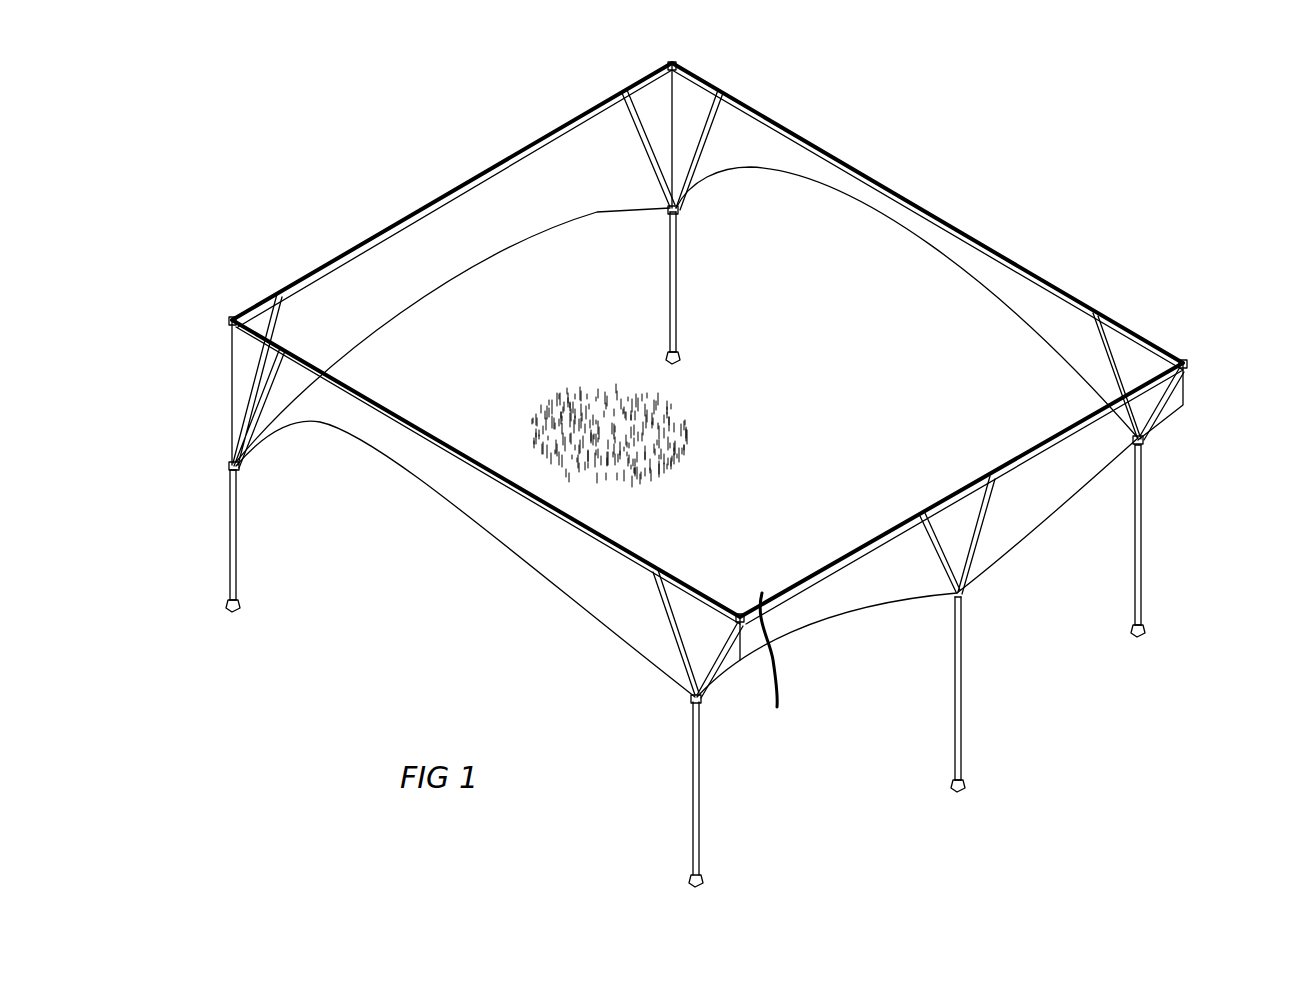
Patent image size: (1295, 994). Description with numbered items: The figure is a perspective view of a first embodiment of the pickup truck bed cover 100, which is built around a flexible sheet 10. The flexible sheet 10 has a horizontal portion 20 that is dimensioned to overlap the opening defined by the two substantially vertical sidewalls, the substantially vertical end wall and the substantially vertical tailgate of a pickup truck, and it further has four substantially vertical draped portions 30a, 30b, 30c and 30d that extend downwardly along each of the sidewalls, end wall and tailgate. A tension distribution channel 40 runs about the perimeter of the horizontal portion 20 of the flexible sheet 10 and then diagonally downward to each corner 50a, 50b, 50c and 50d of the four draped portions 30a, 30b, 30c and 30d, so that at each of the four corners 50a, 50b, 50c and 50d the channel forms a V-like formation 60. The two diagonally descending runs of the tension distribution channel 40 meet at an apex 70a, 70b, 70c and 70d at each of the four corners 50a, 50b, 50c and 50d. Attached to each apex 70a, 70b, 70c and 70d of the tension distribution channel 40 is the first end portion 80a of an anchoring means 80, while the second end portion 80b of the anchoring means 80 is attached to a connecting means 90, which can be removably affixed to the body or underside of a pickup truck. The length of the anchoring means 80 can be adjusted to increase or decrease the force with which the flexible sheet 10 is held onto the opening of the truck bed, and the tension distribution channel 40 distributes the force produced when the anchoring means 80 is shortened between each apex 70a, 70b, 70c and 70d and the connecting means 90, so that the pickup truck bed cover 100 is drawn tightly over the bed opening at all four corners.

The pickup truck bed cover 100 is at (1035, 199).
The flexible sheet 10 is at (1048, 492).
The horizontal portion 20 is at (556, 456).
The substantially vertical draped portion 30a is at (833, 600).
The substantially vertical draped portion 30b is at (622, 590).
The substantially vertical draped portion 30c is at (392, 268).
The substantially vertical draped portion 30d is at (812, 178).
The tension distribution channel 40 is at (778, 673).
The corner 50a is at (1188, 364).
The corner 50b is at (700, 690).
The corner 50c is at (240, 310).
The corner 50d is at (683, 66).
The V-like formation 60 is at (736, 142).
The apex 70a is at (1143, 452).
The apex 70b is at (691, 702).
The apex 70c is at (238, 470).
The apex 70d is at (680, 214).
The anchoring means 80 is at (670, 288).
The first end portion 80a is at (668, 224).
The second end portion 80b is at (670, 334).
The connecting means 90 is at (682, 356).